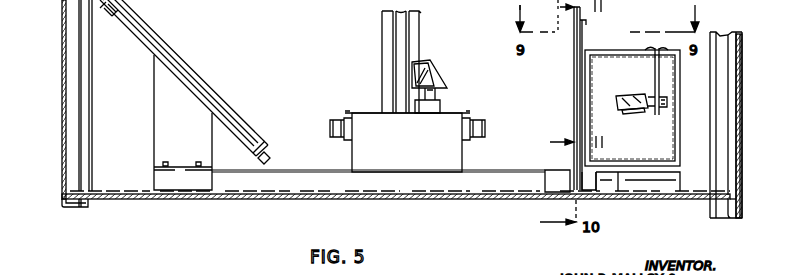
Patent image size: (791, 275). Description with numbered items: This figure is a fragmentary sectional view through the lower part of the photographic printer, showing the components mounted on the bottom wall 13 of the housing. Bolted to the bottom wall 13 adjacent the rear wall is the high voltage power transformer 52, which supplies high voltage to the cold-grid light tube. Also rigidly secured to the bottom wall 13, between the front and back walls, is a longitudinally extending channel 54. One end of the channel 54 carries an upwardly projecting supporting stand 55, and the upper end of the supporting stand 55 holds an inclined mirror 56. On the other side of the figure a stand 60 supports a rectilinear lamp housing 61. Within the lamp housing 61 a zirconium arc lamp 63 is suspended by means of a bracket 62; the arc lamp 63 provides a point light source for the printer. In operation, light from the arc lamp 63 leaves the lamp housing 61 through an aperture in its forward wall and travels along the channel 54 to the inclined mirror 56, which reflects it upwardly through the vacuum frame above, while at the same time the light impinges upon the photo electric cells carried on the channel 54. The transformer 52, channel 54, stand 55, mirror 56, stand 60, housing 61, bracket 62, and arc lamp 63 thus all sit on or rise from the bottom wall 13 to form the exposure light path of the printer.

The bottom wall 13 is at (225, 201).
The high voltage power transformer 52 is at (357, 113).
The longitudinally extending channel 54 is at (283, 170).
The supporting stand 55 is at (152, 126).
The inclined mirror 56 is at (138, 28).
The stand 60 is at (678, 180).
The lamp housing 61 is at (682, 143).
The bracket 62 is at (655, 75).
The zirconium arc lamp 63 is at (628, 113).